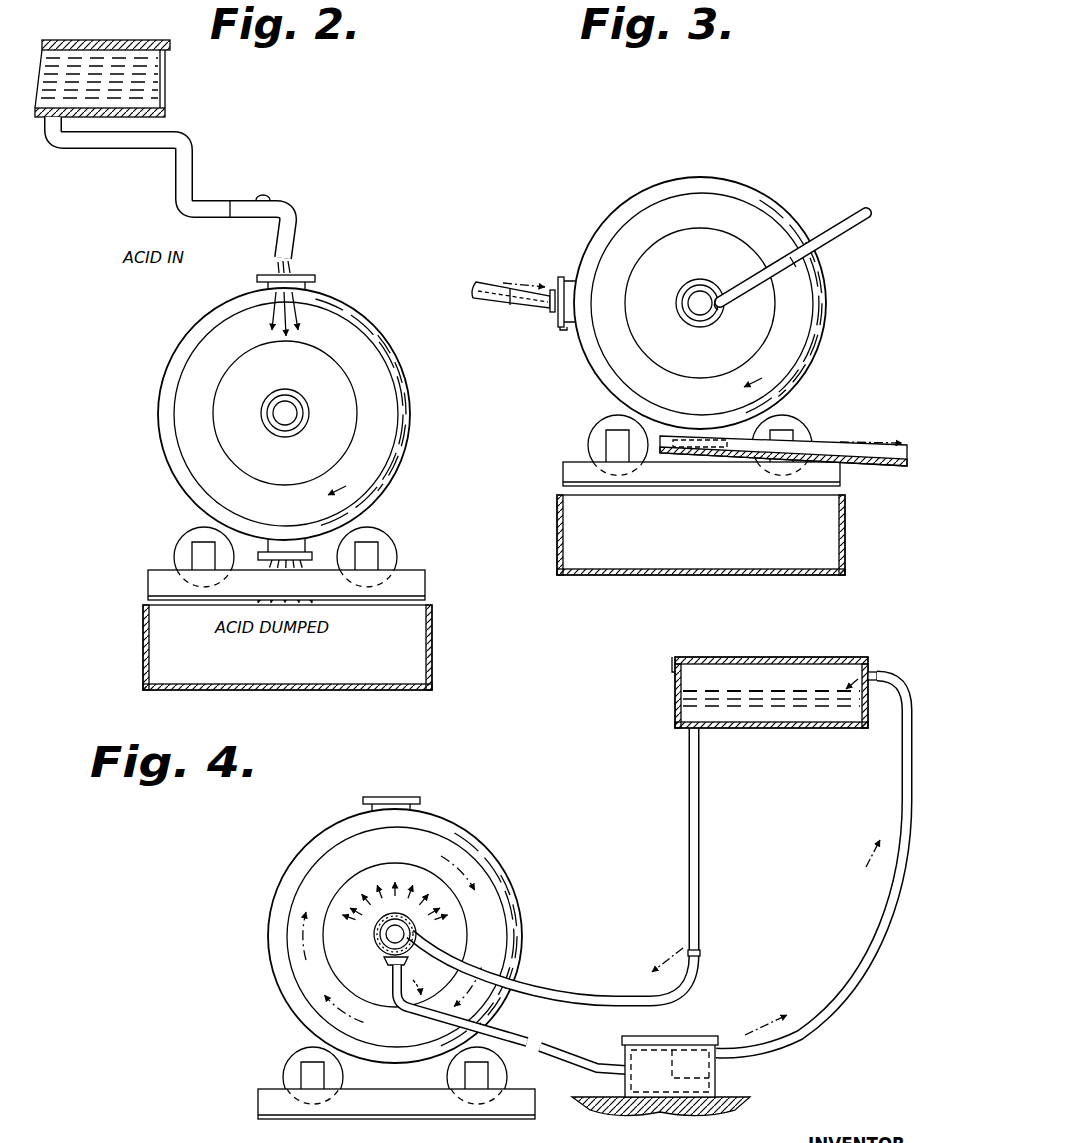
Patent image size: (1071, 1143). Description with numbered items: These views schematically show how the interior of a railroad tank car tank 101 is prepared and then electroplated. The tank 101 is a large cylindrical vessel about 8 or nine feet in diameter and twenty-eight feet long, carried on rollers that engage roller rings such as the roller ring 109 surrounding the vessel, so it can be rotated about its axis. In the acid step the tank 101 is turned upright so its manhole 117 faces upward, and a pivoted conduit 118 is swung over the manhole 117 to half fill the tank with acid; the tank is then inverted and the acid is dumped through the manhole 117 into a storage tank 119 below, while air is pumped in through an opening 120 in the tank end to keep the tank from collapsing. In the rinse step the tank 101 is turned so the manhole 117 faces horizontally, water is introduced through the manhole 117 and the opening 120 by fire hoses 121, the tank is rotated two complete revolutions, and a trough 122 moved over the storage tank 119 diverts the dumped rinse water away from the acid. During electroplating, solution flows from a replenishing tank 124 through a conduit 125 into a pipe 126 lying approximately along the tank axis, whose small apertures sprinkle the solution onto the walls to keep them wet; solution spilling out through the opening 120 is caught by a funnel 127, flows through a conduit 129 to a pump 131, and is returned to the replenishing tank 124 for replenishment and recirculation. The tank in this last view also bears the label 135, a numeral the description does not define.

In FIG. 2, the hub marking 8 is at (285, 413).
In FIG. 3, the hub marking 8 is at (700, 303).
In FIG. 4, the hub marking 8 is at (395, 934).
In FIG. 2, the tank 101 is at (182, 396).
In FIG. 3, the tank 101 is at (700, 303).
In FIG. 2, the roller ring 109 is at (168, 91).
In FIG. 2, the manhole 117 is at (315, 279).
In FIG. 3, the manhole 117 is at (563, 330).
In FIG. 2, the pivoted conduit 118 is at (217, 205).
In FIG. 2, the storage tank 119 is at (433, 662).
In FIG. 3, the storage tank 119 is at (845, 553).
In FIG. 2, the opening 120 is at (279, 407).
In FIG. 3, the opening 120 is at (687, 297).
In FIG. 4, the opening 120 is at (407, 947).
In FIG. 3, the fire hoses 121 is at (498, 305).
In FIG. 3, the trough 122 is at (733, 461).
In FIG. 4, the replenishing tank 124 is at (675, 700).
In FIG. 4, the conduit 125 is at (688, 828).
In FIG. 4, the pipe 126 is at (393, 921).
In FIG. 4, the funnel 127 is at (392, 963).
In FIG. 4, the conduit 129 is at (521, 1040).
In FIG. 4, the pump 131 is at (687, 1052).
In FIG. 4, the drum 135 is at (514, 907).